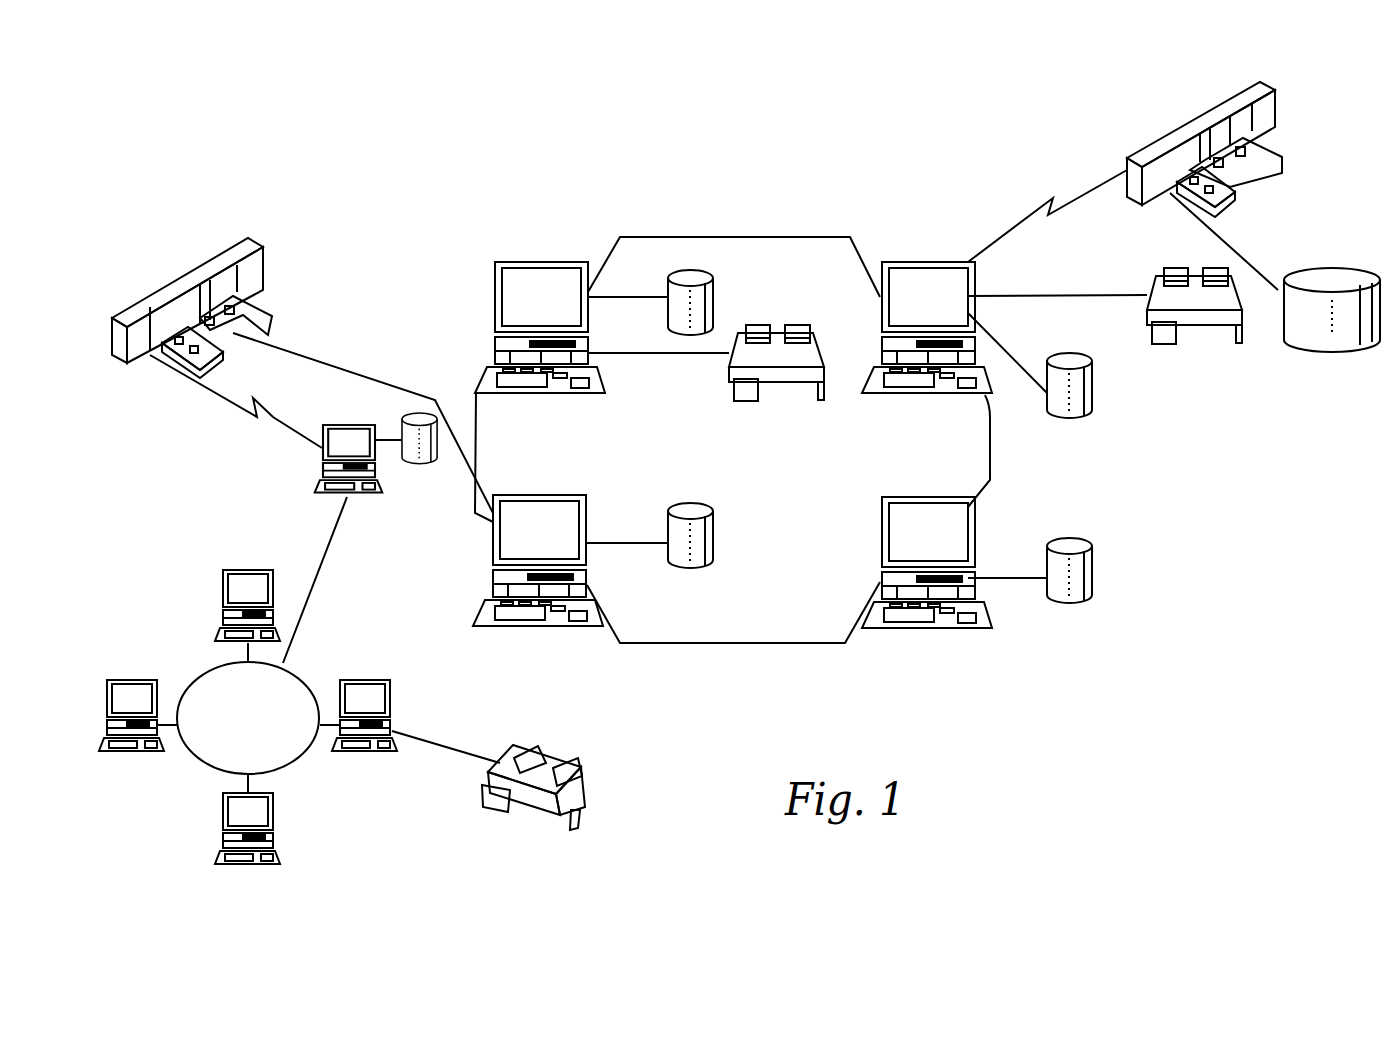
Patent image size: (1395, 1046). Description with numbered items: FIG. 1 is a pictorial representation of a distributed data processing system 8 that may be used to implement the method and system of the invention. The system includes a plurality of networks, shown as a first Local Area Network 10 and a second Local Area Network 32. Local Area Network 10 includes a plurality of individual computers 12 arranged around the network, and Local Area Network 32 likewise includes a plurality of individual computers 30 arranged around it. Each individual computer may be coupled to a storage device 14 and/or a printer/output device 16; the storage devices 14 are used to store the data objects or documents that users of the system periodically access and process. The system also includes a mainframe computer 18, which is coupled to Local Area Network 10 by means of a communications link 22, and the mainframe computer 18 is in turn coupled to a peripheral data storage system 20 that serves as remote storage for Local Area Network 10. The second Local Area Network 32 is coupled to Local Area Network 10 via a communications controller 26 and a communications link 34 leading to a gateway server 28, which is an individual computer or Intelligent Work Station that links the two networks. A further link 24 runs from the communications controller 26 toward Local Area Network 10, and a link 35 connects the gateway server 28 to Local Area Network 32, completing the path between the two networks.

The distributed data processing system 8 is at (765, 200).
The local area network 10 is at (760, 643).
The individual computer 12 is at (559, 262).
The storage device 14 is at (713, 287).
The printer/output device 16 is at (777, 333).
The mainframe computer 18 is at (1200, 118).
The peripheral data storage system 20 is at (1364, 276).
The communications link 22 is at (1086, 190).
The communications link 24 is at (357, 368).
The communications controller 26 is at (262, 242).
The gateway server 28 is at (347, 425).
The individual computer 30 is at (258, 570).
The local area network 32 is at (205, 760).
The communications link 34 is at (268, 415).
The communications link 35 is at (313, 605).